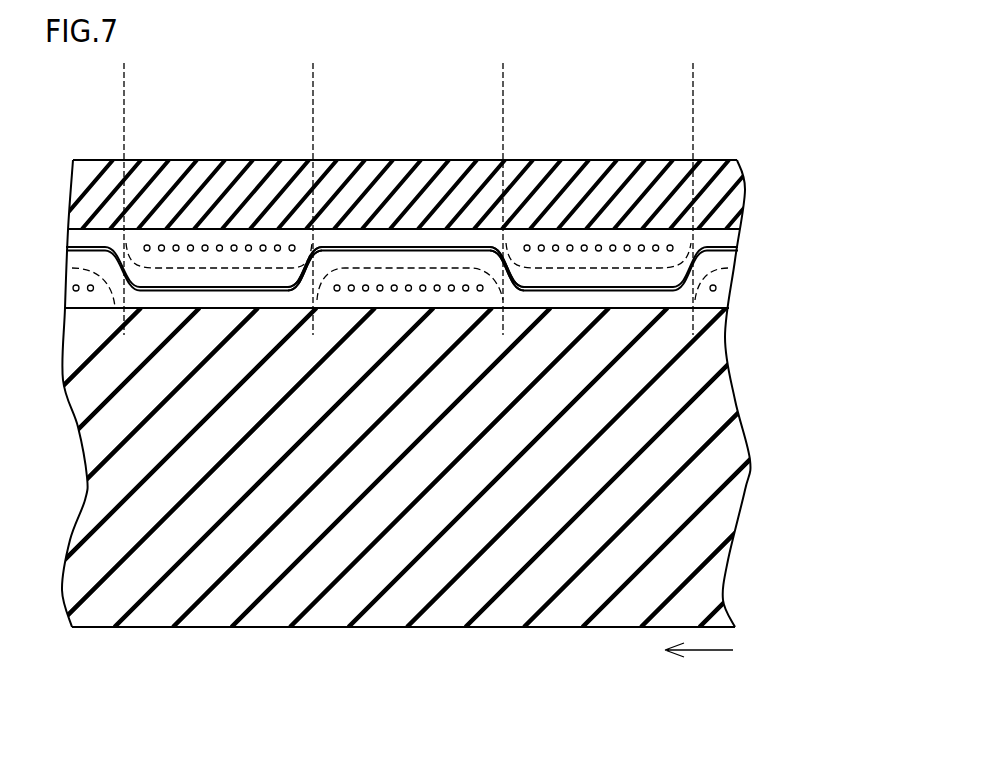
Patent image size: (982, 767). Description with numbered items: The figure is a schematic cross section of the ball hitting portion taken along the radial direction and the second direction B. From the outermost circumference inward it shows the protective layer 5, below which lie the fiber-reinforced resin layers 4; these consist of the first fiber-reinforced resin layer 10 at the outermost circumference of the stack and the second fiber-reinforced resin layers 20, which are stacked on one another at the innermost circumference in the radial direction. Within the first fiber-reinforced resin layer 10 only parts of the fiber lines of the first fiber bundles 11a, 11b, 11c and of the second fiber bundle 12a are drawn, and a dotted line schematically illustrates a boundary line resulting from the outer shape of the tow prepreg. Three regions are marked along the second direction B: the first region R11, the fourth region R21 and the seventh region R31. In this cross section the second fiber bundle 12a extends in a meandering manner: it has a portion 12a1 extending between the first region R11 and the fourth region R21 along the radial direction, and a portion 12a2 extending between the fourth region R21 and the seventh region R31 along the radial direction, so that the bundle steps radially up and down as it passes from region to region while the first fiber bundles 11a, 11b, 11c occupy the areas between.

The fiber-reinforced resin layers 4 is at (802, 255).
The protective layer 5 is at (727, 193).
The first fiber-reinforced resin layer 10 is at (761, 227).
The second fiber-reinforced resin layers 20 is at (727, 455).
The first fiber bundle 11a is at (628, 238).
The first fiber bundle 11b is at (433, 277).
The first fiber bundle 11c is at (222, 238).
The second fiber bundle 12a is at (289, 275).
The portion of second fiber bundle 12a1 is at (507, 272).
The portion of second fiber bundle 12a2 is at (315, 264).
The seventh region R31 is at (313, 78).
The fourth region R21 is at (500, 78).
The first region R11 is at (690, 78).
The second direction B is at (699, 662).